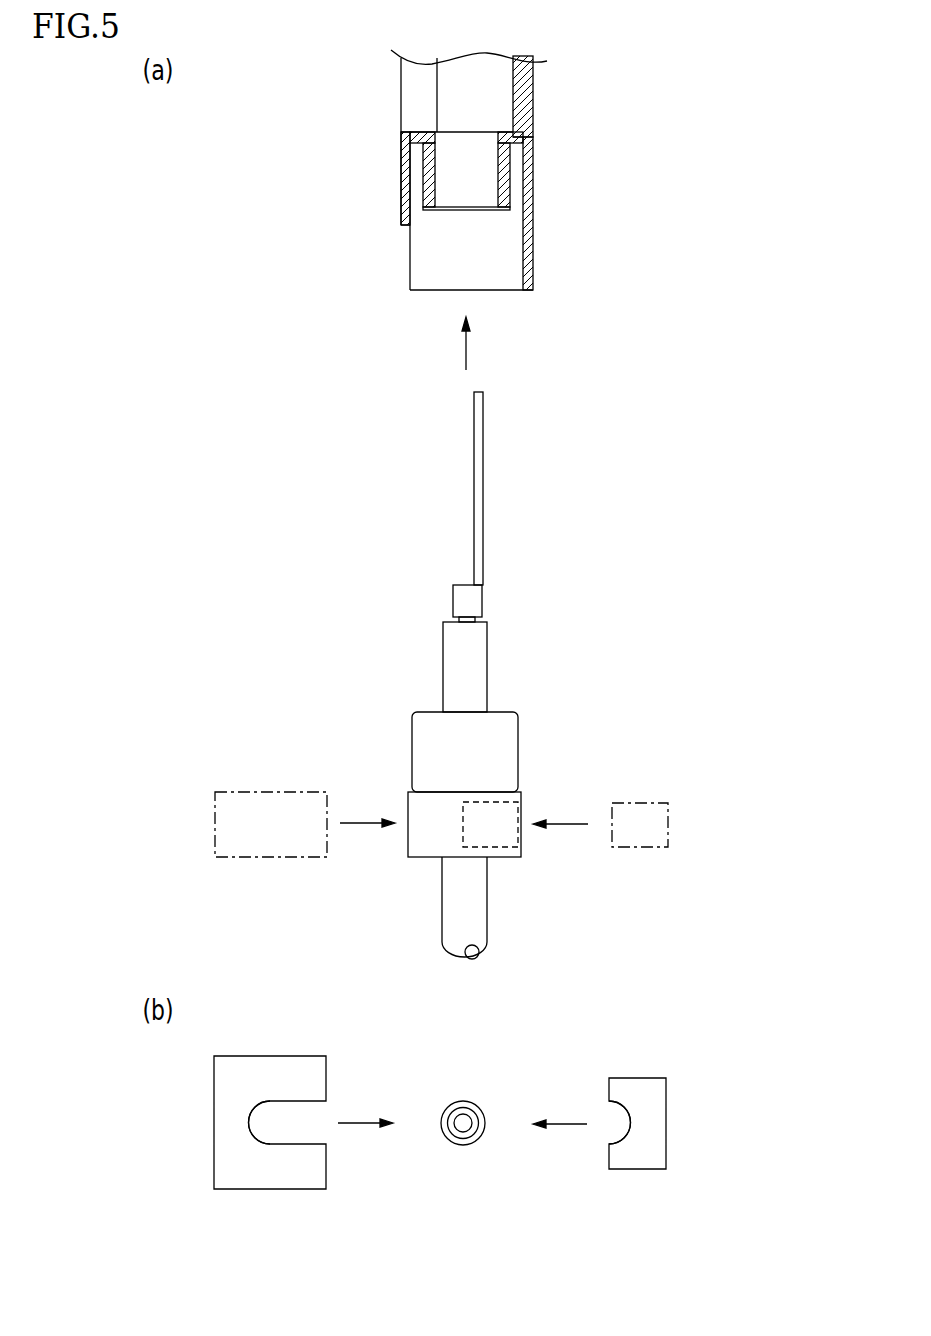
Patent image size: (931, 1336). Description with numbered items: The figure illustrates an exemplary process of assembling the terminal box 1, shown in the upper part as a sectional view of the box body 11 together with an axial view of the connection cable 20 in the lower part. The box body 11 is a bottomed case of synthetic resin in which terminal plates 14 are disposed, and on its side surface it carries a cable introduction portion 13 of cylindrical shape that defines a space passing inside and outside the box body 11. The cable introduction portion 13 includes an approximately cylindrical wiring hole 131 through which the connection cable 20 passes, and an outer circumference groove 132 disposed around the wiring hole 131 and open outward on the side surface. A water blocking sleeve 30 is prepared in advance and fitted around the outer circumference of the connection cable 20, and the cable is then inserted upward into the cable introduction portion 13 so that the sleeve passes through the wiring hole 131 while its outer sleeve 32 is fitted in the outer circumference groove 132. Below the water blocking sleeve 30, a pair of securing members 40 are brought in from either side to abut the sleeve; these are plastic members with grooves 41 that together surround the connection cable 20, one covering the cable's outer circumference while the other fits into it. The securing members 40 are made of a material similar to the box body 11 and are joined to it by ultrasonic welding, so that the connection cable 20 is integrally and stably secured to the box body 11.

The terminal box 1 is at (451, 170).
The box body 11 is at (522, 93).
The cable introduction portion 13 is at (454, 204).
The wiring hole 131 is at (488, 206).
The outer circumference groove 132 is at (410, 216).
The terminal plate 14 is at (480, 438).
The connection cable 20 is at (478, 903).
The water blocking sleeve 30 is at (507, 755).
The outer sleeve 32 is at (539, 721).
The securing member 40 is at (215, 818).
The groove 41 is at (298, 1143).